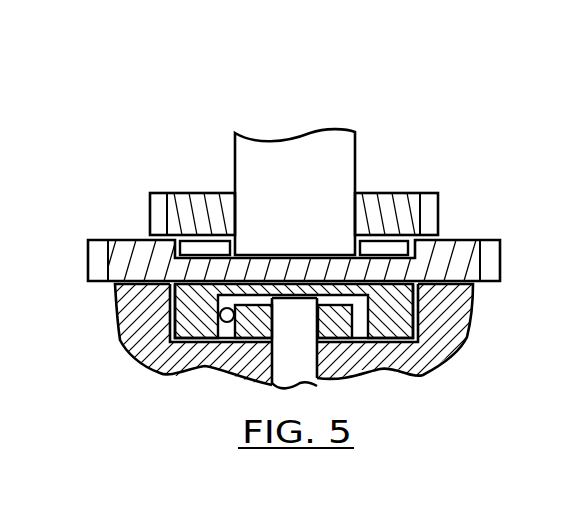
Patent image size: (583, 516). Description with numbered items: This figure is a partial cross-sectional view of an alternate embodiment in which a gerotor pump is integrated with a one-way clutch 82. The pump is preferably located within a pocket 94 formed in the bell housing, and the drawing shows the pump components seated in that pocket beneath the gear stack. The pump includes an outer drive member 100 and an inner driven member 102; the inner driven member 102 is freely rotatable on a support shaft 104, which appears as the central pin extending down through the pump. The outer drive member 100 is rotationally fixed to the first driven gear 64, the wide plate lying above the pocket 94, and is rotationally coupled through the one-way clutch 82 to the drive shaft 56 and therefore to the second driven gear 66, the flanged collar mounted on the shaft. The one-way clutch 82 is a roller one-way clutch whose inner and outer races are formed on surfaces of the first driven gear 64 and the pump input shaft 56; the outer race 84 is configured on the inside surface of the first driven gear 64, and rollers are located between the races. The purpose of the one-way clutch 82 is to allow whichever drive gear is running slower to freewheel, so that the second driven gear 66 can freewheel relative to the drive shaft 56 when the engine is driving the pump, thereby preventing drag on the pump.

The drive shaft 56 is at (296, 163).
The first driven gear 64 is at (468, 240).
The second driven gear 66 is at (382, 193).
The second one-way clutch 82 is at (138, 224).
The outer race 84 is at (180, 258).
The pocket 94 is at (190, 335).
The outer drive member 100 is at (395, 317).
The inner driven member 102 is at (251, 326).
The support shaft 104 is at (298, 372).